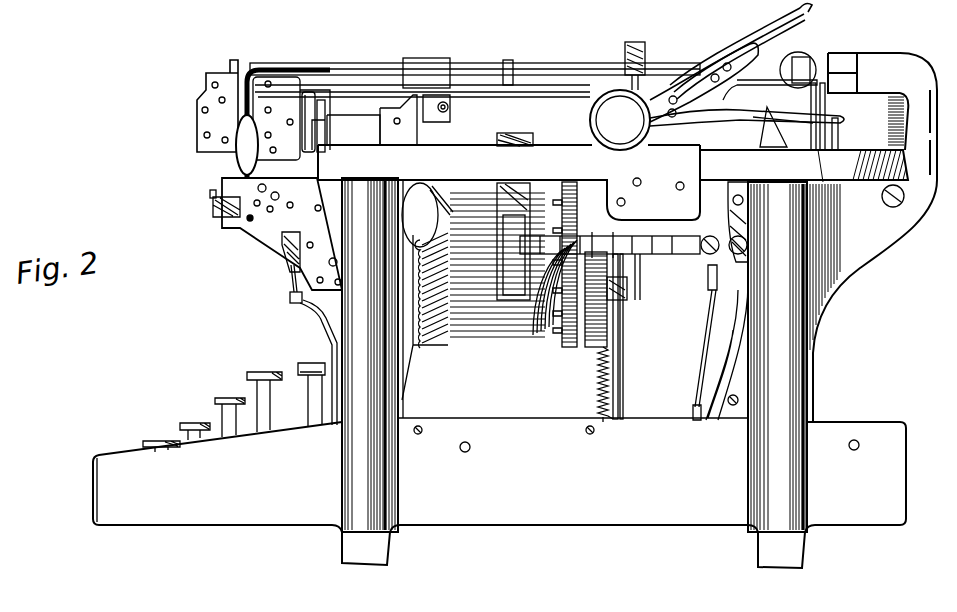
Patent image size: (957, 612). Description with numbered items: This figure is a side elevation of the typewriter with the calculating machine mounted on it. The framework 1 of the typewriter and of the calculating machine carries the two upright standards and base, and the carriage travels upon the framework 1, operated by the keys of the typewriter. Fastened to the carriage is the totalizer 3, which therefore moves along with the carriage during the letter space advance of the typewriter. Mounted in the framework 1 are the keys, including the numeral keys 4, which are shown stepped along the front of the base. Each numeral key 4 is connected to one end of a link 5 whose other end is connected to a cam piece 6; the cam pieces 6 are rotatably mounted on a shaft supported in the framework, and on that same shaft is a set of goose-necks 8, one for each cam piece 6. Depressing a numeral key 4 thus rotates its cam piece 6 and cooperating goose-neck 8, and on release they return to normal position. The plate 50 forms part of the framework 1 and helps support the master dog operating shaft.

The framework 1 is at (365, 357).
The totalizer 3 is at (227, 80).
The numeral keys 4 is at (310, 362).
The link 5 is at (314, 321).
The cam piece 6 is at (300, 253).
The goose-necks 8 is at (622, 118).
The plate 50 is at (245, 187).